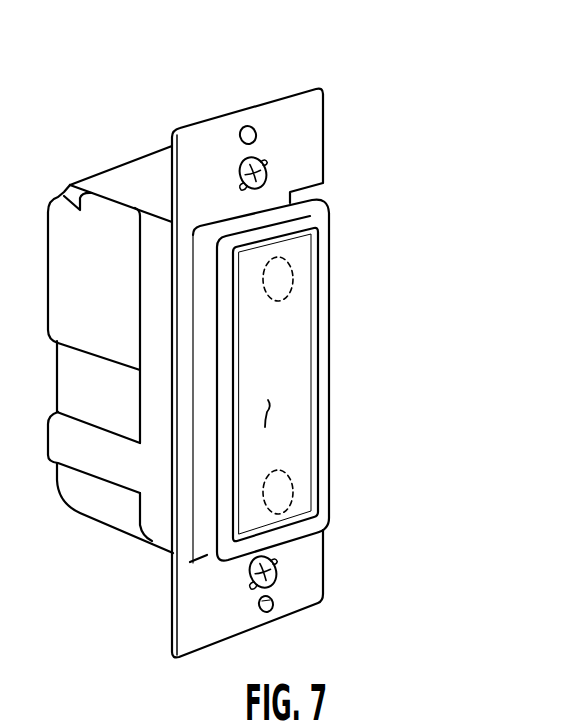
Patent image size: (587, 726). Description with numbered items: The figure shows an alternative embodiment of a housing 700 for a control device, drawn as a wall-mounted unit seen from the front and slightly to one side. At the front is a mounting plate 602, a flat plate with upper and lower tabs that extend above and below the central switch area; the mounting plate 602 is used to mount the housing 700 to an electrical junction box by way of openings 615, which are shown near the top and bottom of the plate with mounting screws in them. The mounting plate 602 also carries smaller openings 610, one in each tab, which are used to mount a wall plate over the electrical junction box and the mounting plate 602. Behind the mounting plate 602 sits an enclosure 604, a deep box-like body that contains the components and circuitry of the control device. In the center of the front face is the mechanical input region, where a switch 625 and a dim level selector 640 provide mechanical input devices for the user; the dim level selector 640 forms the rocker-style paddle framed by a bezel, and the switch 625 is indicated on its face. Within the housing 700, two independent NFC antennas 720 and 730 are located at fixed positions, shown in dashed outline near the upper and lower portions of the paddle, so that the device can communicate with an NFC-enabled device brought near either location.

The housing 700 is at (402, 148).
The mounting plate 602 is at (195, 162).
The enclosure 604 is at (48, 522).
The openings 610 is at (248, 125).
The openings 615 is at (268, 165).
The dim level selector 640 is at (319, 375).
The switch 625 is at (268, 412).
The NFC antenna 720 is at (280, 289).
The NFC antenna 730 is at (283, 488).